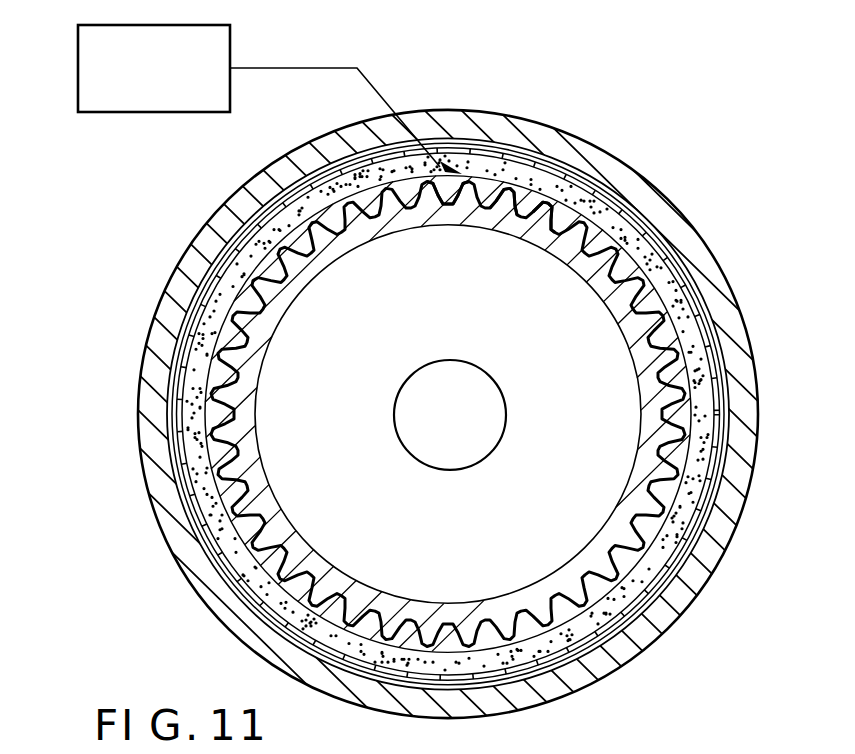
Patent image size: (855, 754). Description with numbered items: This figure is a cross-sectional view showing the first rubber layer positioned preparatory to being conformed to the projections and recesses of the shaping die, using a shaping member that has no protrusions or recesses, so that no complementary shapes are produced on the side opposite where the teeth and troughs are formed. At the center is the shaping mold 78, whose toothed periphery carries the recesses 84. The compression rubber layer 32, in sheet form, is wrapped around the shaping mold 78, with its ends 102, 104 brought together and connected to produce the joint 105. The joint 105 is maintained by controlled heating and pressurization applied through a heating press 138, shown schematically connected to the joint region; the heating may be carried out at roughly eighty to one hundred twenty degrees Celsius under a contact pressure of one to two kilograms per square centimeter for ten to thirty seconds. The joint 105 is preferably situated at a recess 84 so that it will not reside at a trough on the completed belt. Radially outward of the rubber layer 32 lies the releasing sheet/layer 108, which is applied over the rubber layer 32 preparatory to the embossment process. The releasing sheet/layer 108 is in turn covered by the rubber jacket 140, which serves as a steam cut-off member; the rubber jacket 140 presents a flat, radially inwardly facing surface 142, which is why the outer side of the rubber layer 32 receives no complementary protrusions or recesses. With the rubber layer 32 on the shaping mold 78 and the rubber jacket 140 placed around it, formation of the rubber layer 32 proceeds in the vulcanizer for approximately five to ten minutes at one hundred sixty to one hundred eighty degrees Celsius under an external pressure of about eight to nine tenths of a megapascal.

The shaping mold 78 is at (564, 359).
The recess 84 is at (372, 207).
The end 102 is at (420, 173).
The end 104 is at (437, 178).
The joint 105 is at (502, 192).
The compression rubber layer 32 is at (554, 186).
The flat, radially inwardly facing surface 142 is at (587, 200).
The rubber jacket 140 is at (636, 192).
The releasing sheet/layer 108 is at (697, 249).
The heating press 138 is at (136, 100).